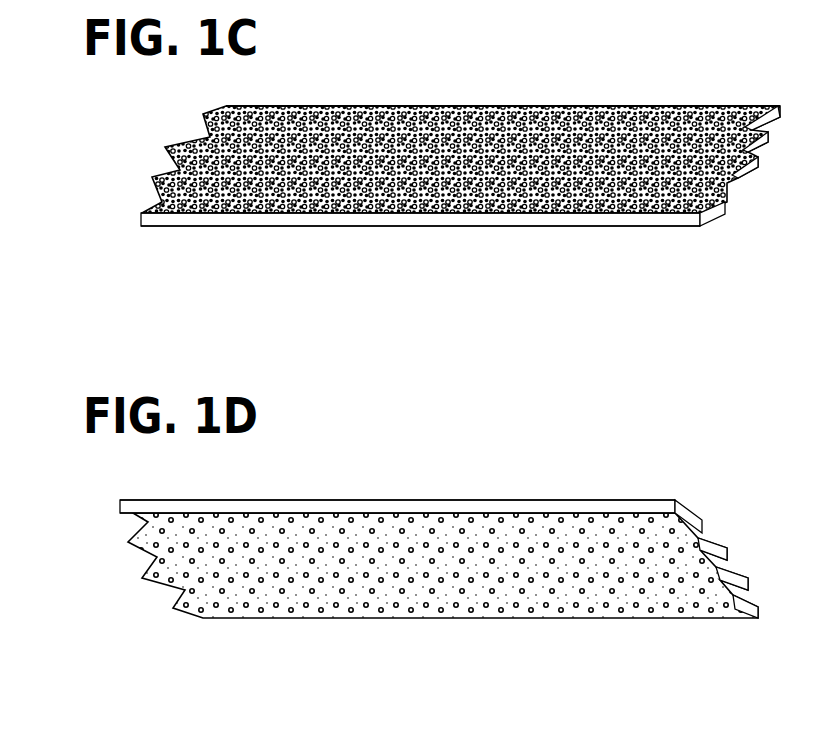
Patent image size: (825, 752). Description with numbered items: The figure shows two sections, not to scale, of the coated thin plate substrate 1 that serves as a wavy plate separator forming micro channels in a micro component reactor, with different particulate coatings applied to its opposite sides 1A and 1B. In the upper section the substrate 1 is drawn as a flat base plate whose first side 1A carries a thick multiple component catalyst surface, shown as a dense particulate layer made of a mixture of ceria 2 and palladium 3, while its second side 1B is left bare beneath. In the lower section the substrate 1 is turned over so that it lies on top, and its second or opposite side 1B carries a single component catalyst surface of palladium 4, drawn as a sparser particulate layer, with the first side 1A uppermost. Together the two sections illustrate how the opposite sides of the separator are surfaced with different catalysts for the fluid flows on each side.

In FIG. 1C, the thin plate substrate 1 is at (345, 218).
In FIG. 1D, the thin plate substrate 1 is at (428, 508).
In FIG. 1C, the first side 1A is at (400, 140).
In FIG. 1D, the first side 1A is at (577, 502).
In FIG. 1C, the second side 1B is at (493, 225).
In FIG. 1D, the second side 1B is at (405, 590).
In FIG. 1C, the ceria 2 is at (608, 137).
In FIG. 1C, the palladium 3 is at (705, 108).
In FIG. 1D, the palladium 4 is at (585, 598).